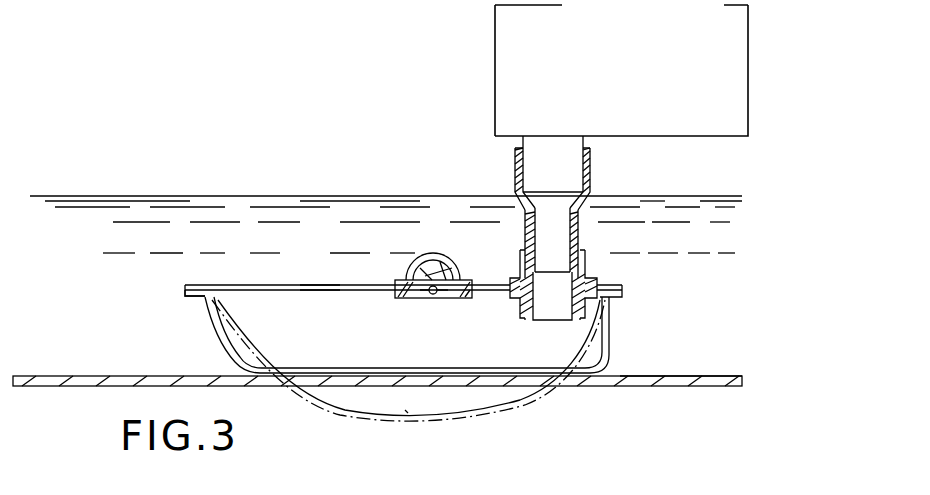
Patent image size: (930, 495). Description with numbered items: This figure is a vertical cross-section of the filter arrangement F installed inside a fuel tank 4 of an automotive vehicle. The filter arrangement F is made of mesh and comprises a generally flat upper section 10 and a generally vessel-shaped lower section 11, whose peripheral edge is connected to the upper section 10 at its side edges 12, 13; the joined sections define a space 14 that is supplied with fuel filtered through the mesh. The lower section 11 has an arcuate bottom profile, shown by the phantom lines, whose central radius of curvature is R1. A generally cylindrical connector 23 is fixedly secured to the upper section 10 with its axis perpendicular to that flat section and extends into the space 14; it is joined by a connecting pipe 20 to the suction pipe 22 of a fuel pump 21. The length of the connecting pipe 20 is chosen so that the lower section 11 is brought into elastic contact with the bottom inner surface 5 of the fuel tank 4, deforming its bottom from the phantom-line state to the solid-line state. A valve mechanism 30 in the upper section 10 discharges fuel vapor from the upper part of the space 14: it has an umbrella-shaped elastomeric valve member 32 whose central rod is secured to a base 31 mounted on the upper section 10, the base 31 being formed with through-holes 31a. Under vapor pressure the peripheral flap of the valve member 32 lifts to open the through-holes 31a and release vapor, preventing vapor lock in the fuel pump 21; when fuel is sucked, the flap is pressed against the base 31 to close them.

The fuel pump 21 is at (495, 36).
The suction pipe 22 is at (572, 170).
The connecting pipe 20 is at (578, 230).
The connector 23 is at (588, 265).
The upper section 10 is at (258, 285).
The longitudinal side 12 is at (190, 285).
The side edge 13 is at (190, 298).
The space 14 is at (318, 302).
The lower section 11 is at (315, 368).
The filter arrangement F is at (350, 408).
The radius of curvature R1 is at (405, 410).
The valve mechanism 30 is at (434, 251).
The base 31 is at (418, 298).
The through-holes 31a is at (461, 312).
The valve member 32 is at (442, 270).
The bottom inner surface 5 is at (636, 376).
The fuel tank 4 is at (690, 386).